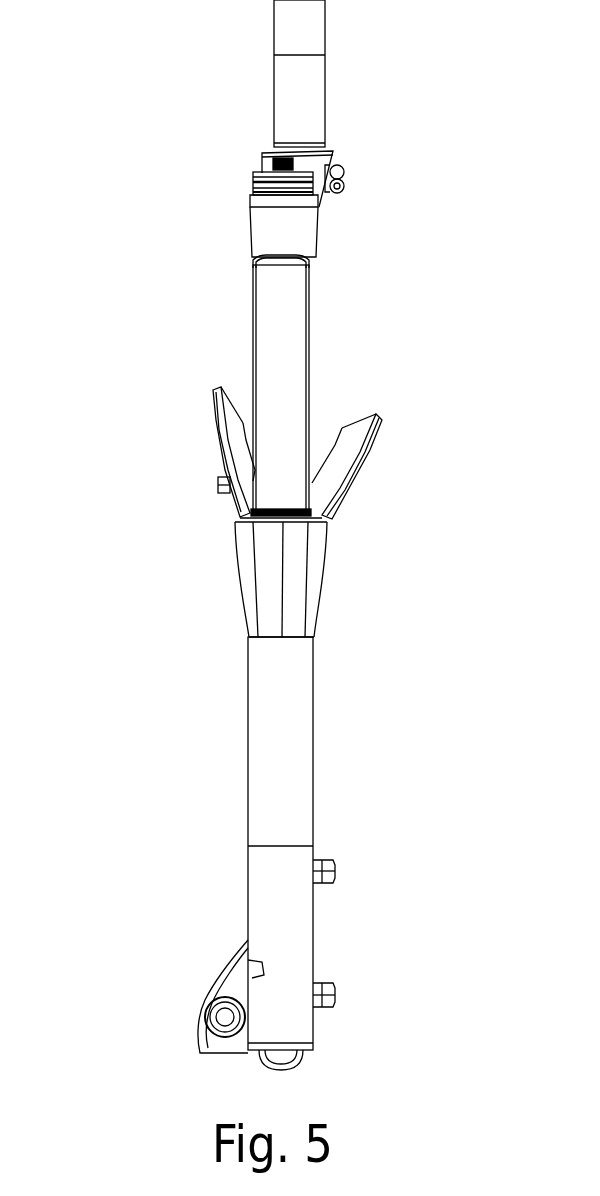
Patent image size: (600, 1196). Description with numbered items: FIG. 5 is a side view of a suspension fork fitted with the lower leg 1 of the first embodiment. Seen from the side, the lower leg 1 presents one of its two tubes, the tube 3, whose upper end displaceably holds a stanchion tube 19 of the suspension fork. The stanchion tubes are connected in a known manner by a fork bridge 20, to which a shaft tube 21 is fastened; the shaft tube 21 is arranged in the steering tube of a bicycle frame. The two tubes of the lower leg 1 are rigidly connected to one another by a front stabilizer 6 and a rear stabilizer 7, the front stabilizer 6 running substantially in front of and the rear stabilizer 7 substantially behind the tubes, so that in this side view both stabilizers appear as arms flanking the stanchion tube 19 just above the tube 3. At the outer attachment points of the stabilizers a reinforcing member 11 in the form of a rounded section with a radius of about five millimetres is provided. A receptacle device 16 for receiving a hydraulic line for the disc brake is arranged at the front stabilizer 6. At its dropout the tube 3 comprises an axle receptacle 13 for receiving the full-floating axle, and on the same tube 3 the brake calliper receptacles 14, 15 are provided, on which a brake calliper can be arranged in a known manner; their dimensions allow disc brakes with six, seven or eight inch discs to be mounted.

The lower leg 1 is at (172, 684).
The tube 3 is at (295, 673).
The front stabilizer 6 is at (238, 423).
The rear stabilizer 7 is at (343, 432).
The reinforcing member 11 is at (235, 522).
The axle receptacle 13 is at (200, 1003).
The brake calliper receptacle 14 is at (335, 878).
The brake calliper receptacle 15 is at (335, 995).
The receptacle for adjusting device 16 is at (218, 482).
The stanchion tube 19 is at (285, 337).
The fork bridge 20 is at (297, 238).
The shaft tube 21 is at (302, 108).